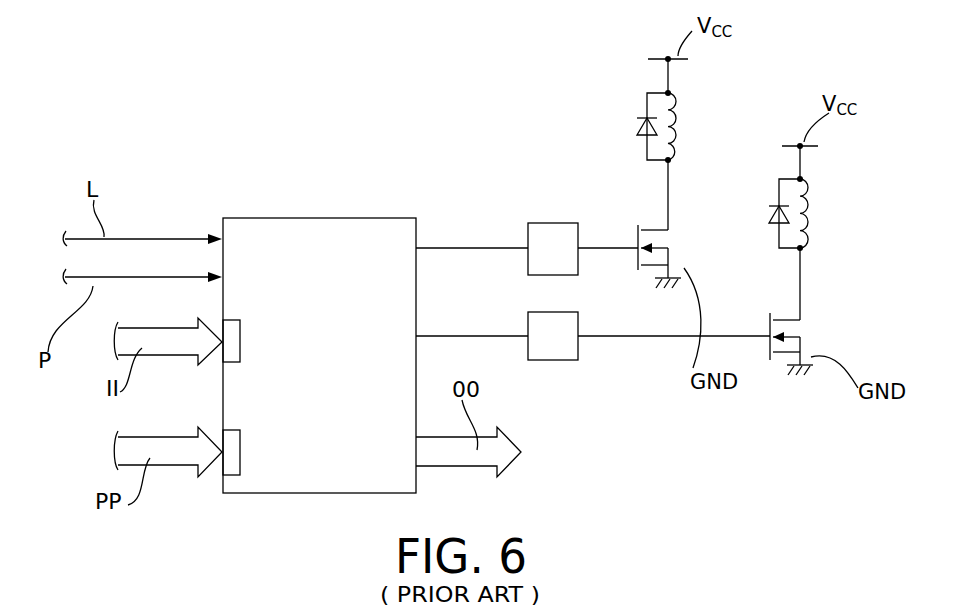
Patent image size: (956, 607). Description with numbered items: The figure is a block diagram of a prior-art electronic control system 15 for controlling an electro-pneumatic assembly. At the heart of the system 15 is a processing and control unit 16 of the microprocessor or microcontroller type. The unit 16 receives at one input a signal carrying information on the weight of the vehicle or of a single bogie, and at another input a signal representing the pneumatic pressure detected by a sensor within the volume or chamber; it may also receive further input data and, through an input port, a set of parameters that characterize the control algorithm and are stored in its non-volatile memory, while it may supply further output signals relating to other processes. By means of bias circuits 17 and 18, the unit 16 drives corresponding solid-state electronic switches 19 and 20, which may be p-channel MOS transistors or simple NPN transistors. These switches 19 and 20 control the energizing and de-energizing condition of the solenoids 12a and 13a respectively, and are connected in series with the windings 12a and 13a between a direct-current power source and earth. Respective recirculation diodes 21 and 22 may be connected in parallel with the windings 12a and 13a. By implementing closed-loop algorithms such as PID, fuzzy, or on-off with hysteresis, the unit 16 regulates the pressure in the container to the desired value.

The electronic control system 15 is at (208, 164).
The processing and control unit 16 is at (345, 232).
The bias circuit 17 is at (550, 237).
The bias circuit 18 is at (578, 345).
The solid-state electronic switch 19 is at (656, 228).
The solid-state electronic switch 20 is at (786, 312).
The recirculation diode 21 is at (639, 118).
The recirculation diode 22 is at (776, 206).
The solenoid 12a is at (676, 128).
The solenoid 13a is at (807, 226).